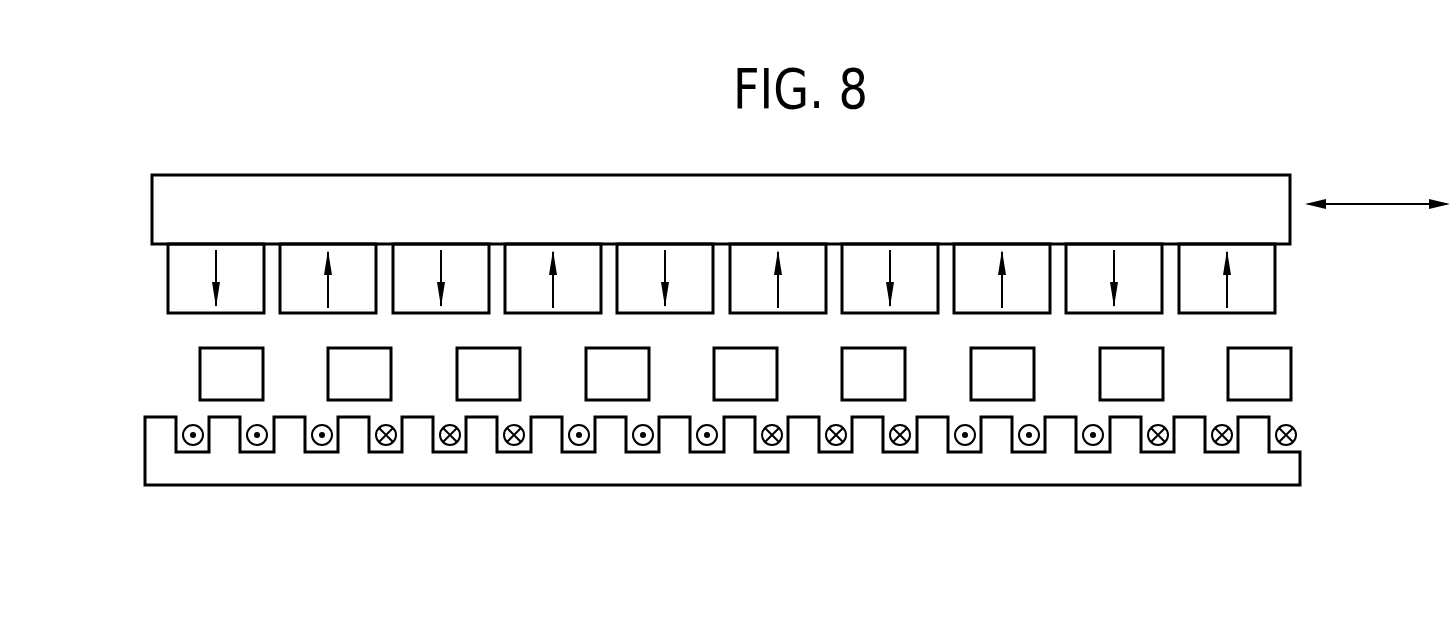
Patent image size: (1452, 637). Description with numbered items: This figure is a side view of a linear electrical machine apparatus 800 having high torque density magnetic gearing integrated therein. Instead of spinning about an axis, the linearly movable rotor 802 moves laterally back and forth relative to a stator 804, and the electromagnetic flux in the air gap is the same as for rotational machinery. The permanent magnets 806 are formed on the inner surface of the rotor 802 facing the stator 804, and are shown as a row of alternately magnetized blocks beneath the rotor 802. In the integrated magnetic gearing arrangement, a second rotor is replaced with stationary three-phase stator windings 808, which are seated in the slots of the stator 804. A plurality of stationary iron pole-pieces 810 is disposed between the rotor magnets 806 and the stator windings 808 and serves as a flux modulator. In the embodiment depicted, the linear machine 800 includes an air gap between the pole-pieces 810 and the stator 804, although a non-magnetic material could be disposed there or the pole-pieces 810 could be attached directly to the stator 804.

The linear electrical machine apparatus 800 is at (236, 140).
The linearly movable rotor 802 is at (403, 191).
The stator 804 is at (1159, 476).
The permanent magnets 806 is at (173, 292).
The stationary three-phase stator windings 808 is at (579, 456).
The stationary iron pole-pieces 810 is at (258, 383).